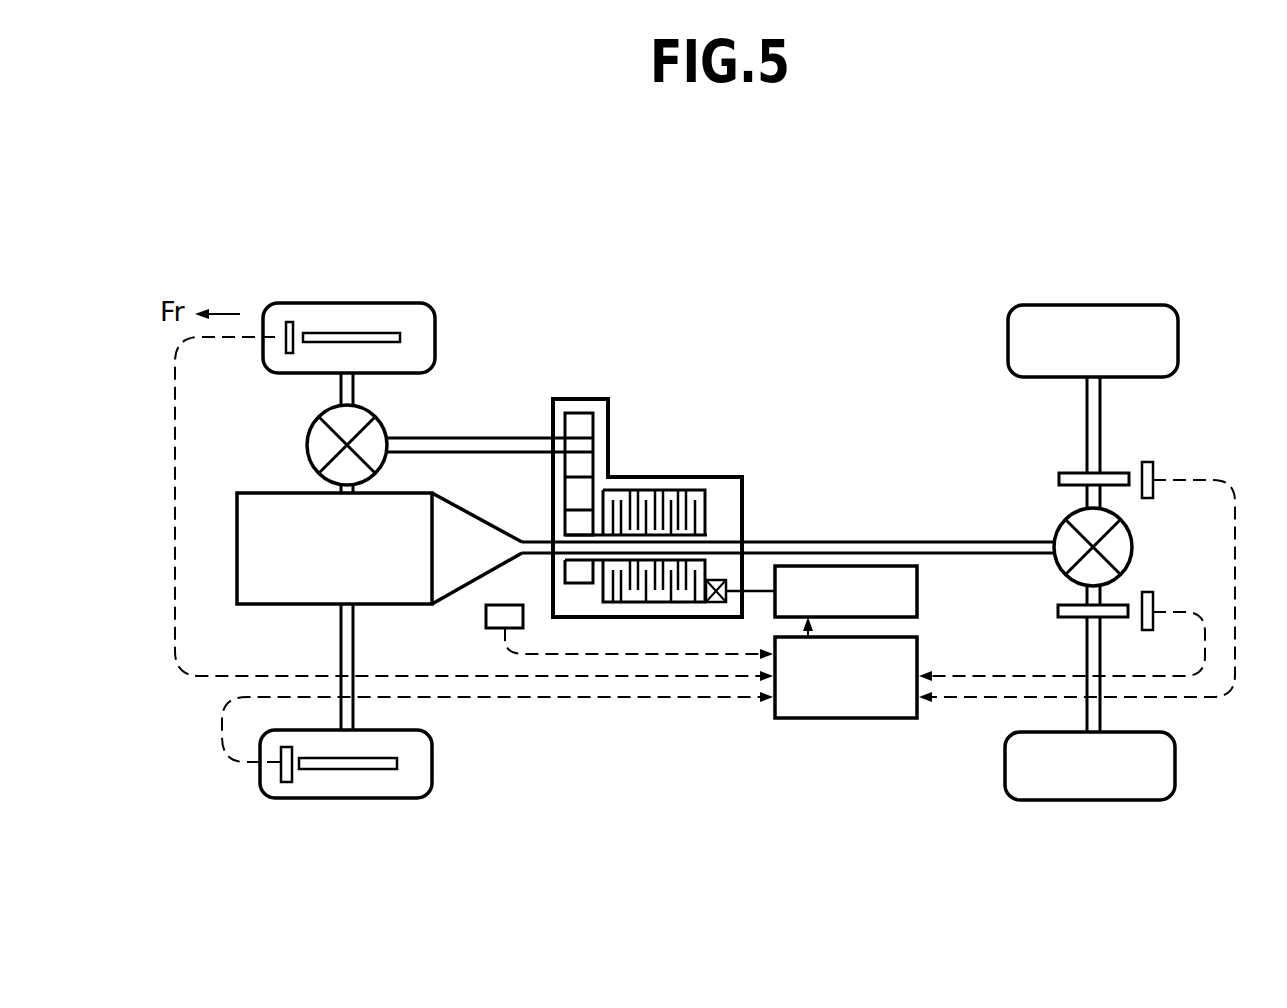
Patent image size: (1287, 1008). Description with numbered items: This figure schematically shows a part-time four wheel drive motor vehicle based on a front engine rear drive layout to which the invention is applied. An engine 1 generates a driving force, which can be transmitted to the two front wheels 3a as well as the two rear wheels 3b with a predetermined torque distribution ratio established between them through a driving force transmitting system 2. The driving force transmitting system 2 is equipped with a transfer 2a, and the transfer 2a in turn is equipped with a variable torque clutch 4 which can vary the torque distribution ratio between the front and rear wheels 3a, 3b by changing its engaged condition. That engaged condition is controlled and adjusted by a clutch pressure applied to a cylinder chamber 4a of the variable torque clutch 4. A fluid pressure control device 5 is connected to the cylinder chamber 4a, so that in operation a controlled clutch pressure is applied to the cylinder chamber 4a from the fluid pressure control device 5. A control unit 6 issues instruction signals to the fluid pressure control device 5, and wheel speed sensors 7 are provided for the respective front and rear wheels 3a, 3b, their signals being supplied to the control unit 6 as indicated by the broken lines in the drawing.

The engine 1 is at (253, 493).
The driving force transmitting system 2 is at (685, 410).
The transfer 2a is at (597, 398).
The front wheels 3a is at (362, 303).
The rear wheels 3b is at (1100, 305).
The variable torque clutch 4 is at (668, 490).
The cylinder chamber 4a is at (722, 580).
The fluid pressure control device 5 is at (917, 596).
The control unit 6 is at (862, 720).
The wheel speed sensors 7 is at (290, 322).